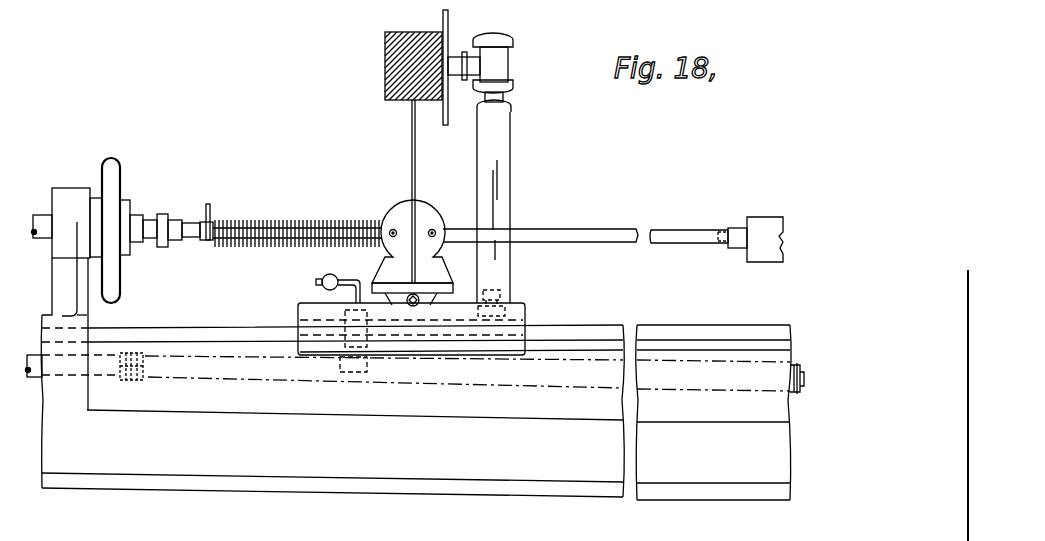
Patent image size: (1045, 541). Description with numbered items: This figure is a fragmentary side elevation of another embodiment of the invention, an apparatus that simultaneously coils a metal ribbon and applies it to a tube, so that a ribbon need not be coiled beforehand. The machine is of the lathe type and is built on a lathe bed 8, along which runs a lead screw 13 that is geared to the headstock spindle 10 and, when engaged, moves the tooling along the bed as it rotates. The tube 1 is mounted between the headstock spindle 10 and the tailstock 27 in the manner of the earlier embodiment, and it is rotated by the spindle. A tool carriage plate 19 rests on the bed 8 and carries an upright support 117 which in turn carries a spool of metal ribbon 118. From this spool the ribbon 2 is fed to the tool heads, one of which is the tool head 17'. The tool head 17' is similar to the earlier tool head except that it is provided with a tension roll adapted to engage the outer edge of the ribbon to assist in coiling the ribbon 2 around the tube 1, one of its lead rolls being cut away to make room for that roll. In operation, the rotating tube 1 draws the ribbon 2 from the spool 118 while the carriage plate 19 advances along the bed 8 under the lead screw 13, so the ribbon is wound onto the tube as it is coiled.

The headstock spindle 10 is at (126, 171).
The metal ribbon 2 is at (270, 220).
The tool head 17' is at (388, 203).
The spool of metal ribbon 118 is at (430, 45).
The support 117 is at (509, 169).
The tube 1 is at (602, 232).
The tailstock 27 is at (763, 216).
The tool carriage plate 19 is at (527, 312).
The lathe bed 8 is at (657, 427).
The lead screw 13 is at (138, 382).